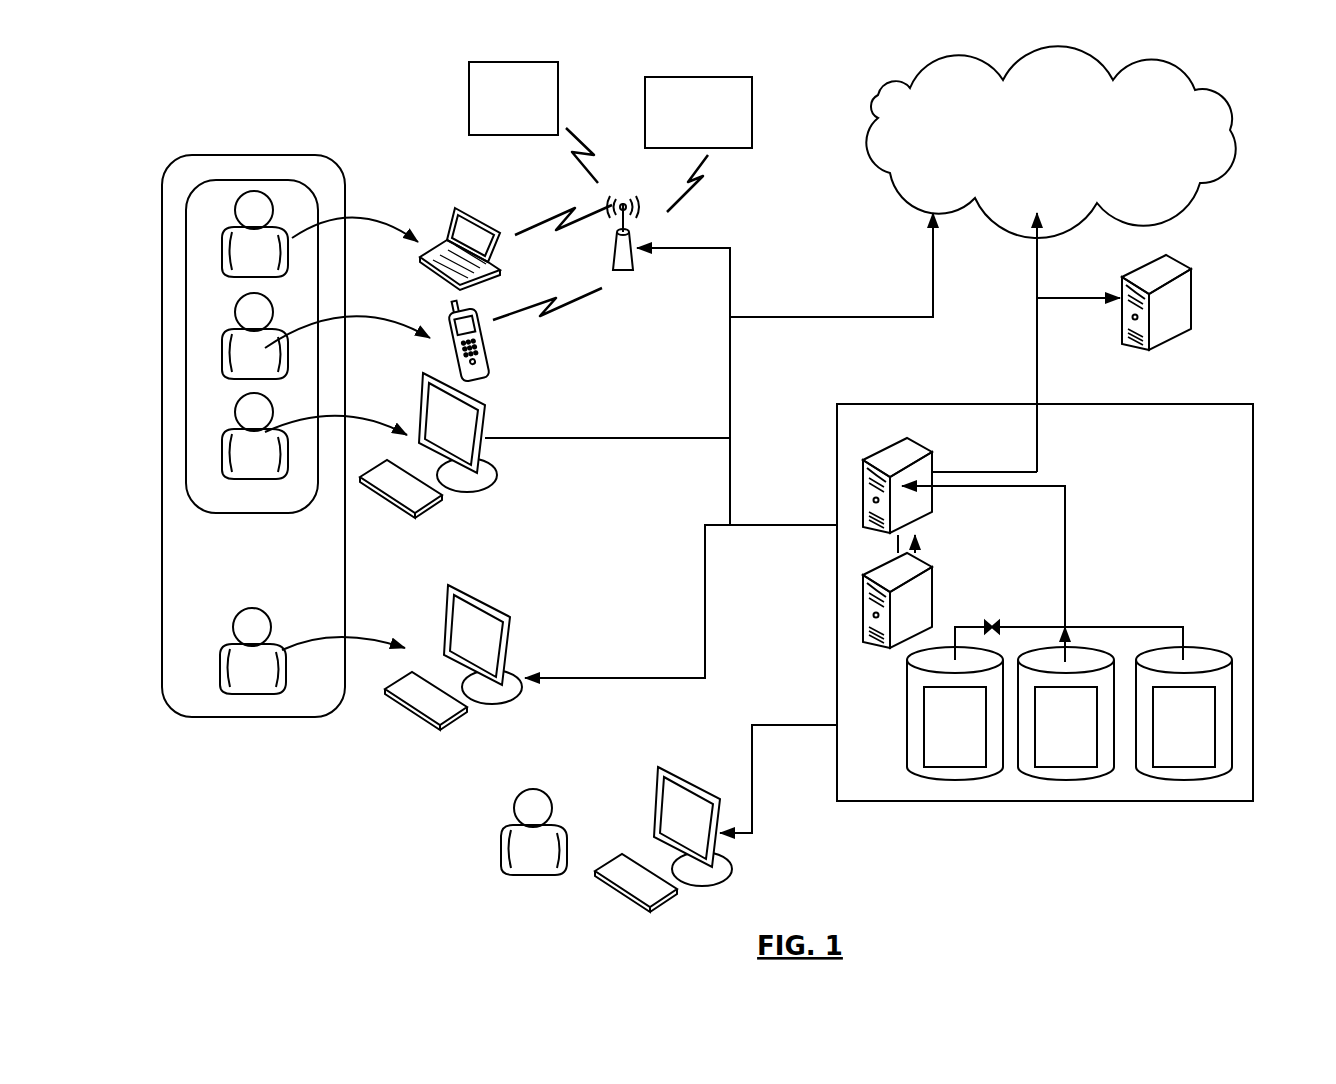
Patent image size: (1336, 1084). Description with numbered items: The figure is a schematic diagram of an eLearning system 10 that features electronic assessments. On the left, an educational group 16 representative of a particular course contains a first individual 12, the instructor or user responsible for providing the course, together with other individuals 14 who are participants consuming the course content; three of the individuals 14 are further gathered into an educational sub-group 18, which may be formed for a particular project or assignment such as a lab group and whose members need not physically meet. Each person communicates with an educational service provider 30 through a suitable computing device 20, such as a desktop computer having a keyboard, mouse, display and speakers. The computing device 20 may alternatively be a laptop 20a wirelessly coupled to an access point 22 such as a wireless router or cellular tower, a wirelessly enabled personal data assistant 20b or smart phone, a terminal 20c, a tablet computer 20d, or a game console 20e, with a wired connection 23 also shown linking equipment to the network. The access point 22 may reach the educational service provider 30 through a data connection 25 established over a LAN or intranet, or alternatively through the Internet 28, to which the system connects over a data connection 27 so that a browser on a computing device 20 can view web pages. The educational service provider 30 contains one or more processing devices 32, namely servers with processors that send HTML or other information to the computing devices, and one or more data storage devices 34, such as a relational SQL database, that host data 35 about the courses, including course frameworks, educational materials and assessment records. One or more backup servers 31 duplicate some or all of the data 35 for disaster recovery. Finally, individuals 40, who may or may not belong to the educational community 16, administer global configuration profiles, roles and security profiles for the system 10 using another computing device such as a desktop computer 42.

The eLearning system 10 is at (200, 127).
The individual 12 is at (223, 652).
The individuals 14 is at (225, 228).
The educational group 16 is at (158, 532).
The educational sub-group 18 is at (292, 178).
The computing device 20 is at (512, 650).
The laptop 20a is at (472, 212).
The personal data assistant 20b is at (478, 323).
The terminal 20c is at (493, 478).
The tablet computer 20d is at (470, 93).
The game console 20e is at (700, 75).
The access point 22 is at (622, 273).
The wired connection 23 is at (602, 438).
The data connection 25 is at (798, 525).
The data connection 27 is at (855, 322).
The Internet 28 is at (880, 125).
The educational service provider 30 is at (857, 403).
The backup server 31 is at (1165, 277).
The processing devices 32 is at (923, 448).
The data storage devices 34 is at (1083, 648).
The data 35 is at (1217, 723).
The individuals 40 is at (507, 830).
The desktop computer 42 is at (732, 855).